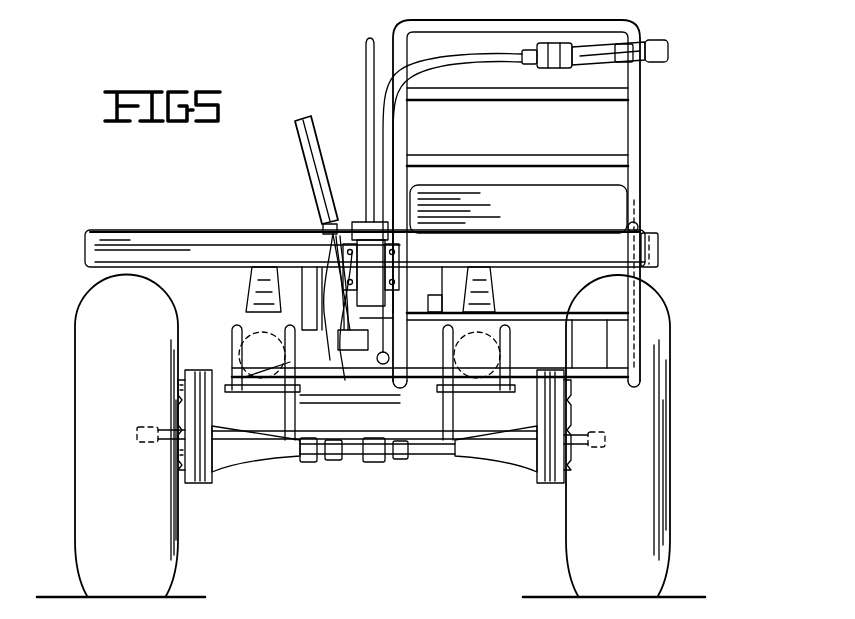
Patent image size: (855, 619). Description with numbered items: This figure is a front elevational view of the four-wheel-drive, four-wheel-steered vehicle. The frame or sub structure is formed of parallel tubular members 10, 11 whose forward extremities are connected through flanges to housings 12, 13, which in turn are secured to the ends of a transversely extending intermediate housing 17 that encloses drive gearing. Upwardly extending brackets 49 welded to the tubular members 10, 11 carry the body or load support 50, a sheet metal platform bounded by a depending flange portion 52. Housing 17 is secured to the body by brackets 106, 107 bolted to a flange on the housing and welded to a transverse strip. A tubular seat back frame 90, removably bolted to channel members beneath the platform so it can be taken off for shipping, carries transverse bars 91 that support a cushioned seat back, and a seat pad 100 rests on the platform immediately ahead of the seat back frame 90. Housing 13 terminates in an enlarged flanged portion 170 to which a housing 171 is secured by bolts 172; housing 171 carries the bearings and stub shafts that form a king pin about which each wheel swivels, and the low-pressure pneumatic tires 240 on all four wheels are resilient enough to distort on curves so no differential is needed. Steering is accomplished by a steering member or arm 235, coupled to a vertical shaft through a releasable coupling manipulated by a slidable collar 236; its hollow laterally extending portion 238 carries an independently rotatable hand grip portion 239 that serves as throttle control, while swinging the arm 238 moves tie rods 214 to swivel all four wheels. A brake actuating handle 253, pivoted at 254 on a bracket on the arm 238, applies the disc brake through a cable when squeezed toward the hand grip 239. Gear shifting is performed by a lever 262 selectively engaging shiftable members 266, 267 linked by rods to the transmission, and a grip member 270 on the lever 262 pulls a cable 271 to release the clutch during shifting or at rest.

The tubular member 10 is at (512, 340).
The tubular member 11 is at (232, 344).
The housing 12 is at (500, 423).
The housing 13 is at (257, 432).
The intermediate housing 17 is at (357, 432).
The brackets 49 is at (248, 290).
The body or load support 50 is at (196, 221).
The flange portion 52 is at (658, 256).
The tubular seat back frame 90 is at (640, 125).
The transverse bars 91 is at (512, 150).
The seat pad 100 is at (616, 198).
The bracket 106 is at (443, 283).
The bracket 107 is at (317, 275).
The flanged portion 170 is at (190, 477).
The housing 171 is at (190, 490).
The bolts 172 is at (182, 477).
The tie rod 214 is at (270, 452).
The steering member or arm 235 is at (370, 148).
The collar 236 is at (356, 222).
The laterally extending portion 238 is at (402, 56).
The hand grip portion 239 is at (656, 48).
The tires 240 is at (83, 518).
The actuating handle 253 is at (622, 66).
The pivot 254 is at (543, 66).
The lever 262 is at (330, 255).
The shiftable member 266 is at (378, 364).
The shiftable member 267 is at (325, 345).
The grip member 270 is at (357, 107).
The cable 271 is at (327, 262).